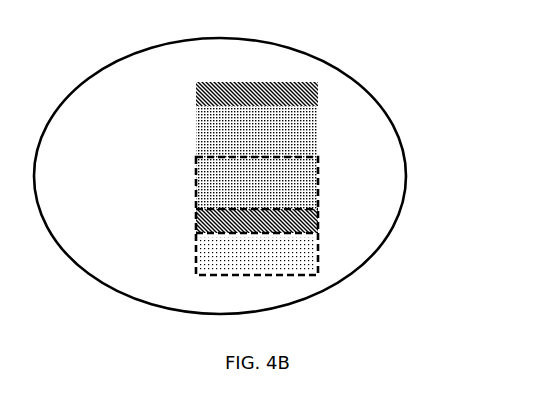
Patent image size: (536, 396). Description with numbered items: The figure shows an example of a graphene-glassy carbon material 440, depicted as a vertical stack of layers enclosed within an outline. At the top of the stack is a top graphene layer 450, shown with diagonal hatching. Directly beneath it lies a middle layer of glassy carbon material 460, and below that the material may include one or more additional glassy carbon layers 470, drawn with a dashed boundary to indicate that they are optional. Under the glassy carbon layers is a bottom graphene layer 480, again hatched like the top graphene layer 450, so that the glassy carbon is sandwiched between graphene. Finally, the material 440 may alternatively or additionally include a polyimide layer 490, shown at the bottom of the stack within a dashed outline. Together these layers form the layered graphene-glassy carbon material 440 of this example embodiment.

The graphene-glassy carbon material 440 is at (362, 82).
The top graphene layer 450 is at (196, 97).
The middle layer of glassy carbon material 460 is at (196, 133).
The additional glassy carbon layer 470 is at (196, 185).
The bottom graphene layer 480 is at (196, 223).
The polyimide layer 490 is at (196, 256).